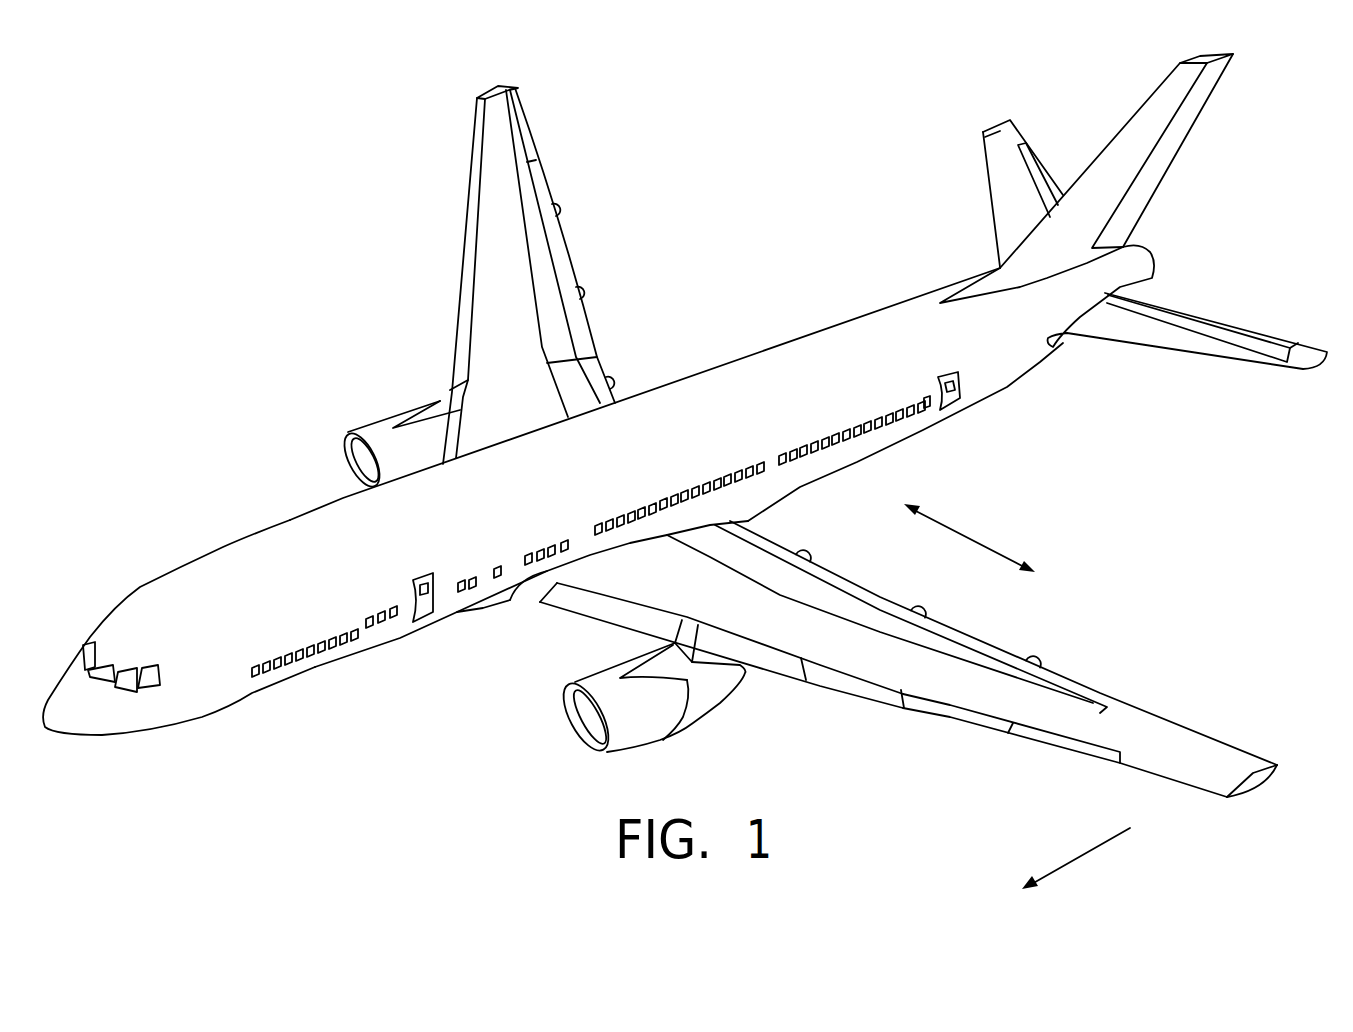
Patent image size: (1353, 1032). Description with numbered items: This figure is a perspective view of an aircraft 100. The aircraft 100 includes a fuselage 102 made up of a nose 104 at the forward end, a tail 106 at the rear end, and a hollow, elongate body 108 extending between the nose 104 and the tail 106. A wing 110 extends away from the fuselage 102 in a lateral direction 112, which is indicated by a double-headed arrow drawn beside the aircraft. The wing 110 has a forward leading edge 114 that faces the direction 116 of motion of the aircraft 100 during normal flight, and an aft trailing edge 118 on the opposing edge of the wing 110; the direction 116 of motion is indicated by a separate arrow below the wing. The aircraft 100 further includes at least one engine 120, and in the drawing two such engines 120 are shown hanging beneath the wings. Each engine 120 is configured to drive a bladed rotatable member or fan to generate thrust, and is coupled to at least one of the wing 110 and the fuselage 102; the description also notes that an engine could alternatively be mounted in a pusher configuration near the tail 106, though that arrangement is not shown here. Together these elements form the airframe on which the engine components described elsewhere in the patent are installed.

The aircraft 100 is at (303, 278).
The fuselage 102 is at (703, 408).
The nose 104 is at (150, 613).
The tail 106 is at (1033, 368).
The hollow, elongate body 108 is at (470, 539).
The wing 110 is at (897, 681).
The lateral direction 112 is at (963, 518).
The forward leading edge 114 is at (1120, 765).
The direction of motion 116 is at (1090, 850).
The aft trailing edge 118 is at (1167, 720).
The engine 120 is at (373, 427).